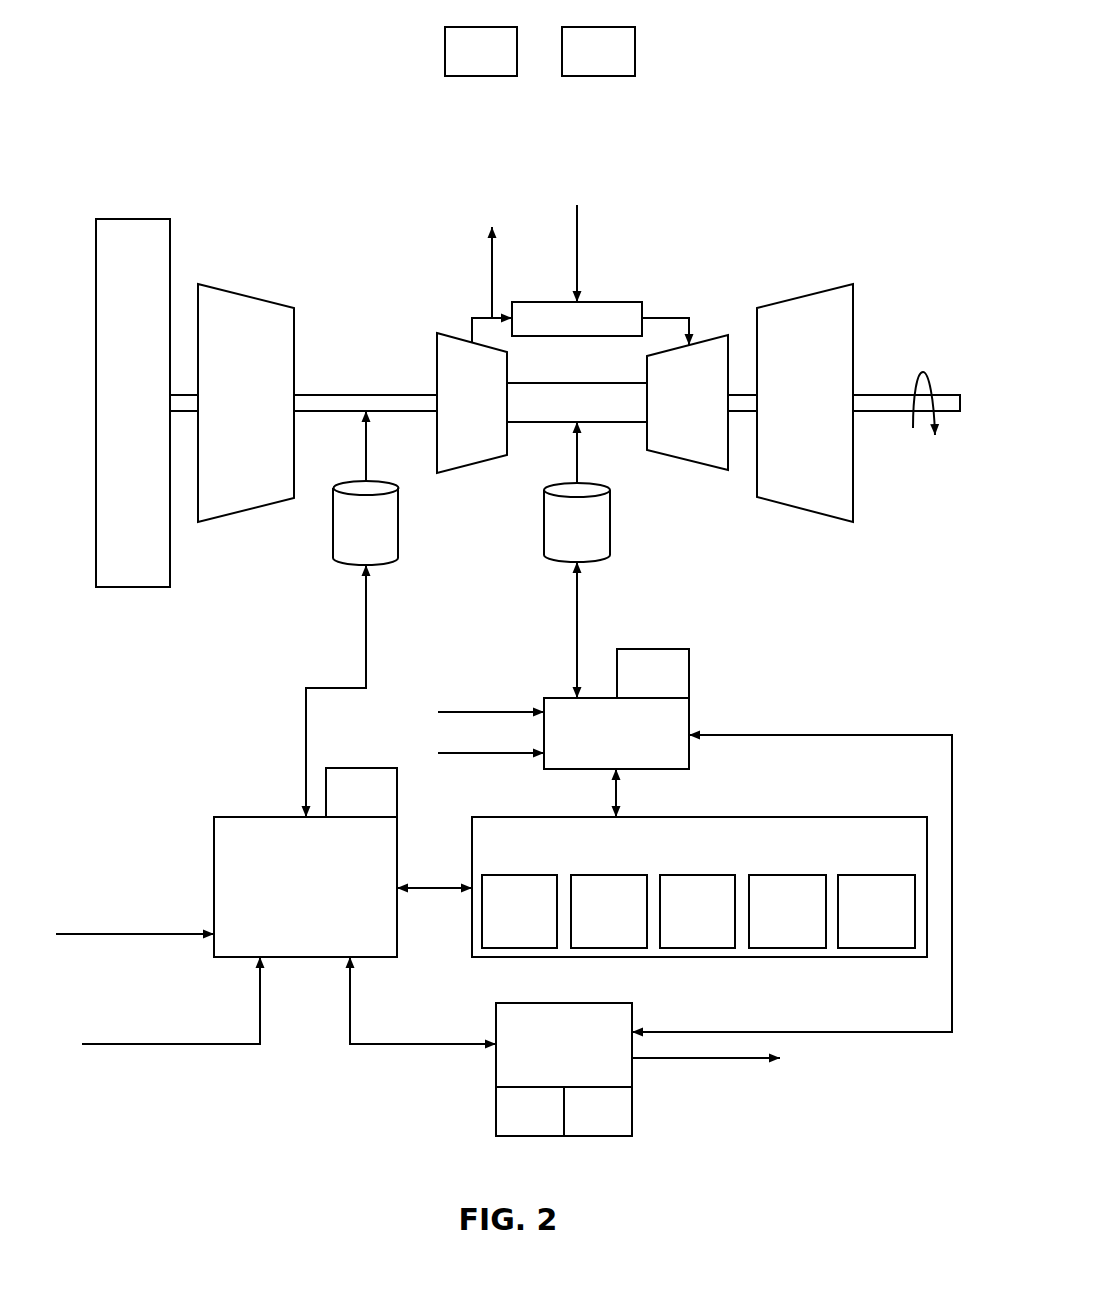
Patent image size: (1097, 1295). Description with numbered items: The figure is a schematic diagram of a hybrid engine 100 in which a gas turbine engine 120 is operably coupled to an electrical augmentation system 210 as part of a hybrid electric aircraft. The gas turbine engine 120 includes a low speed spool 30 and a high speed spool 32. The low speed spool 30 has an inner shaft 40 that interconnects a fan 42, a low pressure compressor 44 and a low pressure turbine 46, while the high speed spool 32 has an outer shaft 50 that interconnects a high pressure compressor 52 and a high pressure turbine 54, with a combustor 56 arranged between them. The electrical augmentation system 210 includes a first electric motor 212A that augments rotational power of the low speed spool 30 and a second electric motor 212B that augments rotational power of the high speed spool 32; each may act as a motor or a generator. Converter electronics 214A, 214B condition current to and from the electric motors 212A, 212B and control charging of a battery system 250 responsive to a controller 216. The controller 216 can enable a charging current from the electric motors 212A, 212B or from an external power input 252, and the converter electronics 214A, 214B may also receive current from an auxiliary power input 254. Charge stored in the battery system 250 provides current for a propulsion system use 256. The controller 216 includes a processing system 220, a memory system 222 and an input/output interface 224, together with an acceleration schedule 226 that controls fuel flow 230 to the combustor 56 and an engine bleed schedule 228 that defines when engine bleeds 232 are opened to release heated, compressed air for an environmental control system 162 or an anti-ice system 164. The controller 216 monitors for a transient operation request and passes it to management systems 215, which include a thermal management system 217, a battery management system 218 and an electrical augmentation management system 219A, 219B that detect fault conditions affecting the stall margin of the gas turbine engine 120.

The hybrid engine 100 is at (768, 60).
The gas turbine engine 120 is at (122, 210).
The environmental control system 162 is at (461, 65).
The anti-ice system 164 is at (578, 65).
The low speed spool 30 is at (305, 213).
The high speed spool 32 is at (695, 492).
The inner shaft 40 is at (372, 395).
The fan 42 is at (135, 226).
The low pressure compressor 44 is at (252, 297).
The low pressure turbine 46 is at (803, 297).
The outer shaft 50 is at (535, 425).
The high pressure compressor 52 is at (453, 347).
The high pressure turbine 54 is at (712, 340).
The combustor 56 is at (612, 302).
The fuel flow 230 is at (580, 248).
The engine bleeds 232 is at (497, 272).
The electrical augmentation system 210 is at (312, 572).
The first electric motor 212A is at (398, 553).
The second electric motor 212B is at (610, 553).
The converter electronics 214A is at (276, 899).
The converter electronics 214B is at (588, 747).
The management systems 215 is at (495, 1106).
The controller 216 is at (576, 853).
The thermal management system 217 is at (510, 1122).
The battery management system 218 is at (578, 1122).
The electrical augmentation management system 219A is at (333, 807).
The electrical augmentation management system 219B is at (625, 689).
The processing system 220 is at (499, 922).
The memory system 222 is at (589, 922).
The input/output interface 224 is at (677, 922).
The acceleration schedule 226 is at (767, 922).
The engine bleed schedule 228 is at (856, 922).
The battery system 250 is at (543, 1056).
The power input 252 is at (490, 712).
The auxiliary power input 254 is at (492, 753).
The propulsion system use 256 is at (690, 1060).